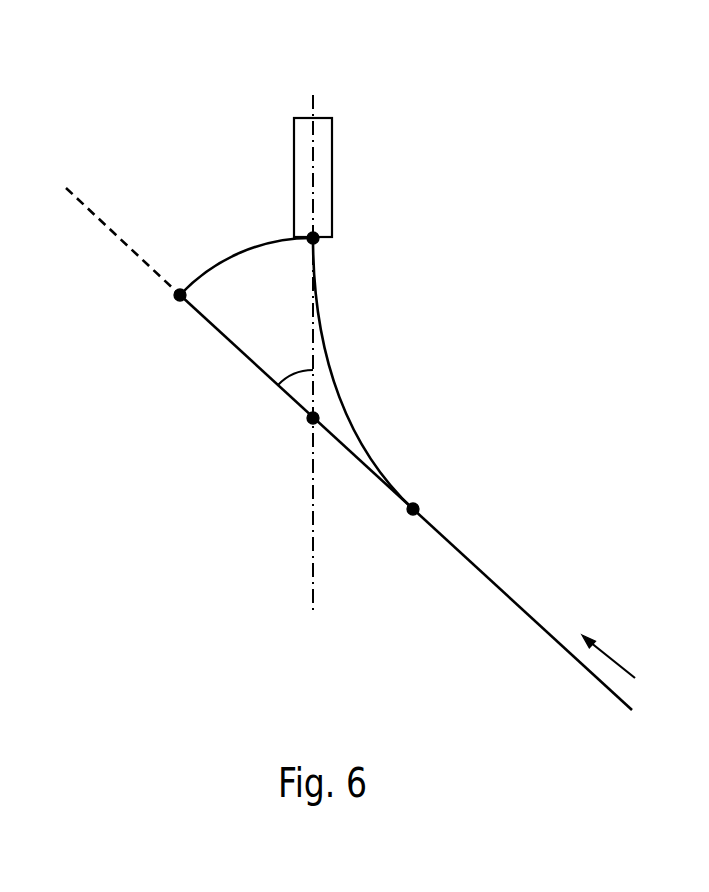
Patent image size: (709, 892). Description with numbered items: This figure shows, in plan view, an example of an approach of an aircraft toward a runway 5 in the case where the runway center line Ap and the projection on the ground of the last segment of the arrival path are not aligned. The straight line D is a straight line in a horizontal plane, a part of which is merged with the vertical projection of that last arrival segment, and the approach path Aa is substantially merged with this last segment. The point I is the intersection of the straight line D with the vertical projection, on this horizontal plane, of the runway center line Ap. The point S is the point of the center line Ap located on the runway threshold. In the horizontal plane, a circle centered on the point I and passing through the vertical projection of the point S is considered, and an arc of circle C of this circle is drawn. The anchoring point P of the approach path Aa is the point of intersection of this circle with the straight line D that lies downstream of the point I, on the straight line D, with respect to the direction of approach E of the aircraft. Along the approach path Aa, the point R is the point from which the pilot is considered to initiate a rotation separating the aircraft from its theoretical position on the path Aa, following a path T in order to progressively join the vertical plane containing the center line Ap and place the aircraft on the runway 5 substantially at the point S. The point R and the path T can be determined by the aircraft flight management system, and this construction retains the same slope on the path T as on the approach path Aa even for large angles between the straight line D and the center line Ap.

The runway 5 is at (323, 180).
The arc of circle C is at (235, 244).
The straight line D is at (108, 238).
The anchoring point P is at (178, 300).
The runway threshold point S is at (318, 242).
The transition path T is at (350, 408).
The intersection point I is at (308, 422).
The rotation initiation point R is at (420, 507).
The runway center line Ap is at (310, 543).
The approach path Aa is at (480, 602).
The direction of approach E is at (622, 667).